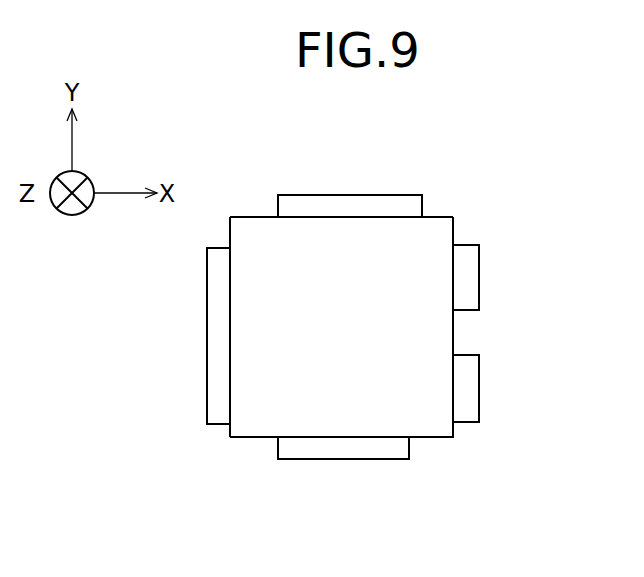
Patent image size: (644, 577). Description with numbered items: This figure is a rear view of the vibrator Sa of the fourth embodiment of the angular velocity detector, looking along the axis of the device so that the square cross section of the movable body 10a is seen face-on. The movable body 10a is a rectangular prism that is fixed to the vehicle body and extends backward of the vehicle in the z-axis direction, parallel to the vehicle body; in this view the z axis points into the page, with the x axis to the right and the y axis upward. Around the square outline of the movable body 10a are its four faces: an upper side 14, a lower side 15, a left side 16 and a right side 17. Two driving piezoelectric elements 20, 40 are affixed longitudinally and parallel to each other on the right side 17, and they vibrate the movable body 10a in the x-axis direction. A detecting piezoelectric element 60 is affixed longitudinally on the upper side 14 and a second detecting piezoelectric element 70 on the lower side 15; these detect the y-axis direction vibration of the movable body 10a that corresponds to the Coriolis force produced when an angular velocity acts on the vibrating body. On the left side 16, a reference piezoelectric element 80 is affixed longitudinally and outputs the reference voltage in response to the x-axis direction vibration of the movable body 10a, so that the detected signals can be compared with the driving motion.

The vibrator Sa is at (336, 321).
The movable body 10a is at (452, 443).
The upper side 14 is at (260, 217).
The lower side 15 is at (253, 438).
The left side 16 is at (230, 233).
The right side 17 is at (453, 228).
The driving piezoelectric element 20 is at (479, 273).
The driving piezoelectric element 40 is at (479, 383).
The detecting piezoelectric element 60 is at (335, 195).
The detecting piezoelectric element 70 is at (347, 459).
The reference piezoelectric element 80 is at (207, 331).